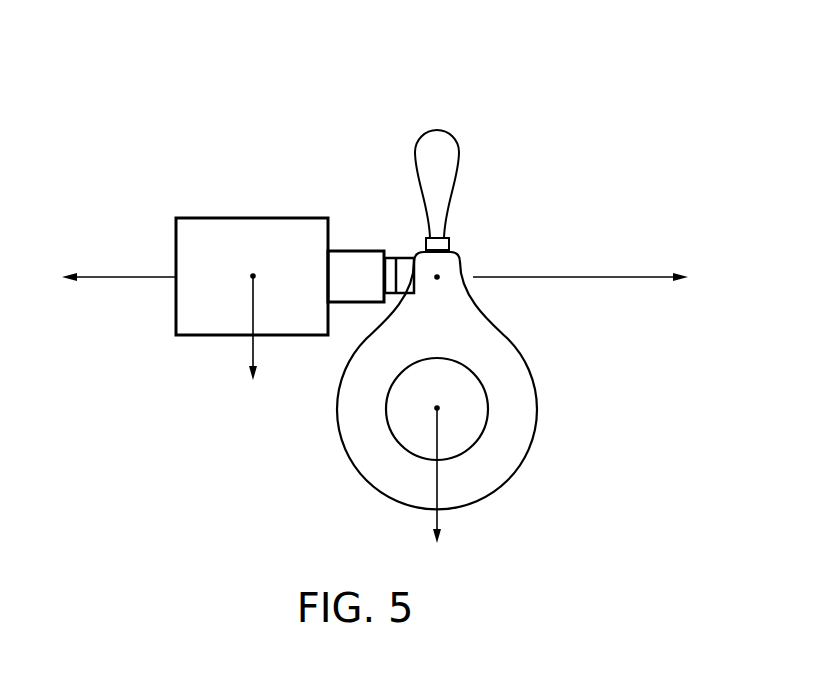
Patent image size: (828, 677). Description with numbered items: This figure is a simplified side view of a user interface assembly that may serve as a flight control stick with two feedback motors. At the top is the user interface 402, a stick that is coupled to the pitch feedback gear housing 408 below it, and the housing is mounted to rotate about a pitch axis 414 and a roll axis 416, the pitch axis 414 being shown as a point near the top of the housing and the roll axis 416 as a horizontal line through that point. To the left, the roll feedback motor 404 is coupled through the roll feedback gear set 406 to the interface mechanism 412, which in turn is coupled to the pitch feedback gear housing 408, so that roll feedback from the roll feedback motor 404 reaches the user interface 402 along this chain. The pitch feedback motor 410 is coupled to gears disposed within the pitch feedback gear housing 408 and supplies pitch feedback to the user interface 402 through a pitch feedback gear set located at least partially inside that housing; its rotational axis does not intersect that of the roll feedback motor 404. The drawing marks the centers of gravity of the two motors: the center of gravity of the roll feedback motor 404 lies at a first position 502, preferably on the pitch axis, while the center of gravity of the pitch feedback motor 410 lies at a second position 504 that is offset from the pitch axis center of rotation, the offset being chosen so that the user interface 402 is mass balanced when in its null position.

The user interface 402 is at (450, 130).
The roll feedback motor 404 is at (205, 217).
The roll feedback gear set 406 is at (358, 250).
The pitch feedback gear housing 408 is at (340, 420).
The pitch feedback motor 410 is at (475, 372).
The interface mechanism 412 is at (403, 258).
The pitch axis 414 is at (437, 277).
The roll axis 416 is at (612, 277).
The first position 502 is at (253, 276).
The second position 504 is at (437, 408).